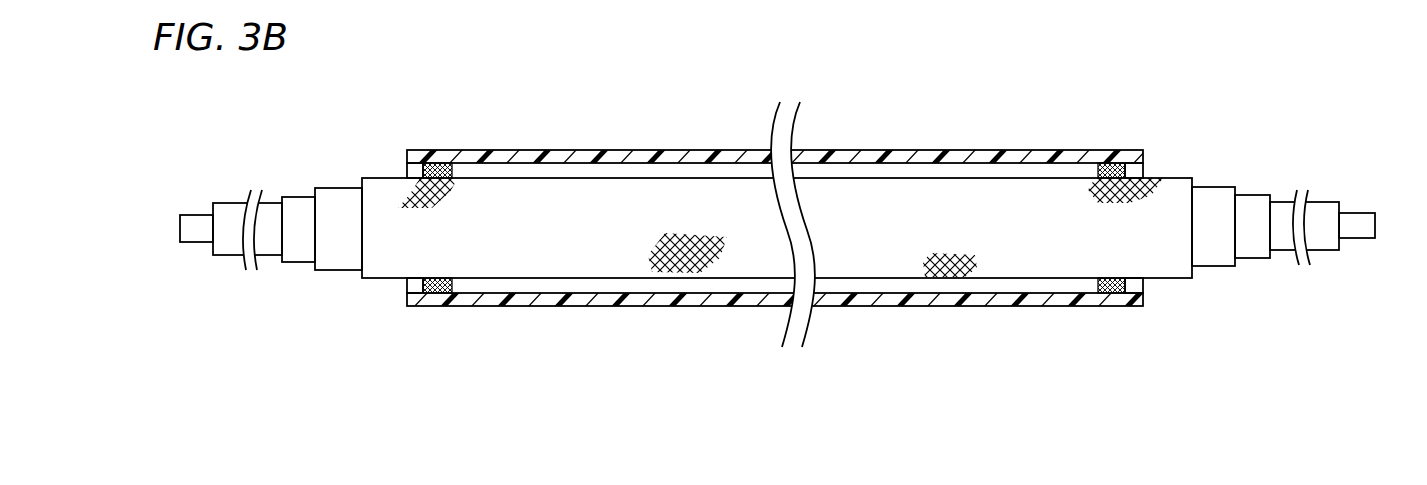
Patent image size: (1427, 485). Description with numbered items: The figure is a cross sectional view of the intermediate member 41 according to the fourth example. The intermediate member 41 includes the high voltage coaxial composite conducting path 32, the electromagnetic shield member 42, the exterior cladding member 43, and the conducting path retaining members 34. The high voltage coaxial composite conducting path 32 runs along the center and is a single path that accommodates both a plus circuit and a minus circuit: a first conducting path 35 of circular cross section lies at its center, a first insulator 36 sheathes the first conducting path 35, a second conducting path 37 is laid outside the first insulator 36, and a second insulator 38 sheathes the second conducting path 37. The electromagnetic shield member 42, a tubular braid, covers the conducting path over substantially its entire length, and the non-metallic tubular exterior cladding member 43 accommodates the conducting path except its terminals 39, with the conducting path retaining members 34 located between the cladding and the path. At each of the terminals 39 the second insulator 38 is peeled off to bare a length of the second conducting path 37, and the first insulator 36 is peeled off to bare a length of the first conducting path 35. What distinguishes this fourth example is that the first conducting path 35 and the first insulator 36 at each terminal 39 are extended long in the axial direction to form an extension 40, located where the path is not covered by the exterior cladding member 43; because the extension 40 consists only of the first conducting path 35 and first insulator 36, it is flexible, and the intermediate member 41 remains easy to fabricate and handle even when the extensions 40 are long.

The high voltage coaxial composite conducting path 32 is at (1208, 184).
The conducting path retaining member 34 is at (455, 289).
The first conducting path 35 is at (1357, 212).
The first insulator 36 is at (1283, 252).
The second conducting path 37 is at (1247, 249).
The second insulator 38 is at (1207, 256).
The terminal 39 is at (271, 266).
The extension 40 is at (228, 210).
The intermediate member 41 is at (744, 212).
The electromagnetic shield member 42 is at (612, 250).
The exterior cladding member 43 is at (672, 150).